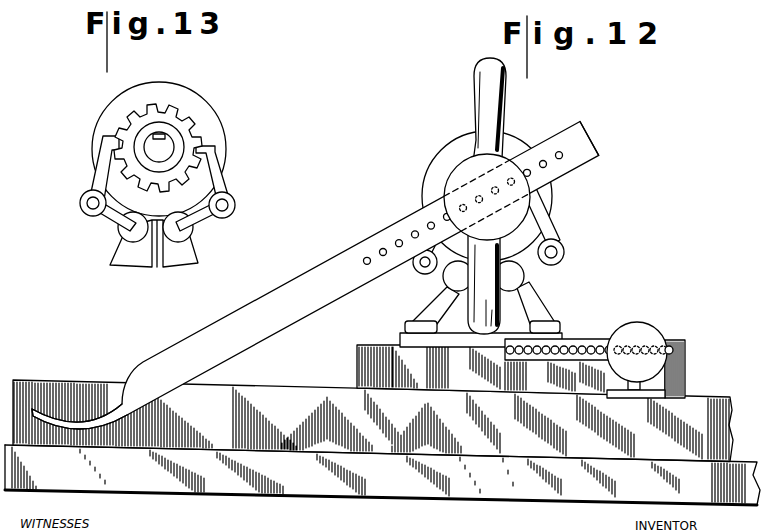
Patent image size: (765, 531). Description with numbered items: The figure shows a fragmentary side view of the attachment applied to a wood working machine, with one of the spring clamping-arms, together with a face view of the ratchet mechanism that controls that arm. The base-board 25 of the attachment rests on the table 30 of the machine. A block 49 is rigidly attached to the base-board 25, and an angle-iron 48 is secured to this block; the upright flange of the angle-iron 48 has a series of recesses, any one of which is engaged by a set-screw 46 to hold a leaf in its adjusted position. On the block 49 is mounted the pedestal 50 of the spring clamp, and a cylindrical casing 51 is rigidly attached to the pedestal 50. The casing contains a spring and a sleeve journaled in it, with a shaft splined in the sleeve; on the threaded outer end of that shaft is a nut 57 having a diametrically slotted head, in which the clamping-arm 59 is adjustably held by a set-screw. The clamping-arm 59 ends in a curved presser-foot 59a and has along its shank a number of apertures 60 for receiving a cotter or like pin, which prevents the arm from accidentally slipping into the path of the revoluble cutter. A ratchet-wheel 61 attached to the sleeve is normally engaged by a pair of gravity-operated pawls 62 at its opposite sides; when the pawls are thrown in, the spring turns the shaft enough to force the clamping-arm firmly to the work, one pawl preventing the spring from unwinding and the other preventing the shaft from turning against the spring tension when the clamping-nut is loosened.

In FIG. 12, the base-board 25 is at (268, 390).
In FIG. 12, the table 30 is at (392, 495).
In FIG. 12, the set-screw 46 is at (646, 340).
In FIG. 12, the angle-iron 48 is at (568, 345).
In FIG. 12, the block 49 is at (687, 378).
In FIG. 13, the pedestal 50 is at (128, 250).
In FIG. 12, the pedestal 50 is at (510, 300).
In FIG. 13, the cylindrical casing 51 is at (225, 136).
In FIG. 12, the cylindrical casing 51 is at (514, 143).
In FIG. 12, the nut 57 is at (468, 196).
In FIG. 12, the clamping-arm 59 is at (327, 276).
In FIG. 12, the curved presser-foot 59a is at (50, 405).
In FIG. 12, the apertures 60 is at (562, 157).
In FIG. 13, the ratchet-wheel 61 is at (188, 119).
In FIG. 13, the pawls 62 is at (107, 165).
In FIG. 12, the pawls 62 is at (440, 272).